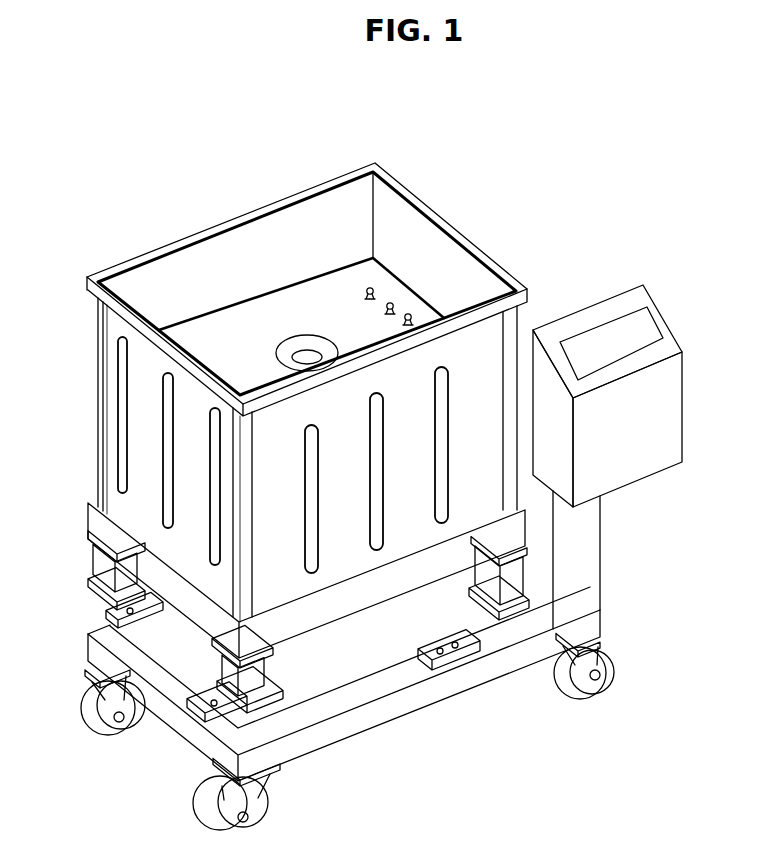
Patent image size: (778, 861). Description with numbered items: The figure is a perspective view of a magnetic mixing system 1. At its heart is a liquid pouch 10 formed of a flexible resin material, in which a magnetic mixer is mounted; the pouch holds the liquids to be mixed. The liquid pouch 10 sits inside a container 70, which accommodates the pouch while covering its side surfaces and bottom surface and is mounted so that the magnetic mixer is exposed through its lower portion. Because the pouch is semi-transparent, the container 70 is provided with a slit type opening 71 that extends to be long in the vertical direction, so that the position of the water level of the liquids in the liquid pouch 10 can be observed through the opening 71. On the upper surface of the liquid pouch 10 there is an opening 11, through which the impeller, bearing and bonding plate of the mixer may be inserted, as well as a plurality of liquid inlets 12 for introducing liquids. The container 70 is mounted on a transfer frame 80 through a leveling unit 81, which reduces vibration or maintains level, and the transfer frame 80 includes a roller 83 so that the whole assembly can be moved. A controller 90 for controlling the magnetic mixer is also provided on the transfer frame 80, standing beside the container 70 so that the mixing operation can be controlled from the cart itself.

The magnetic mixing system 1 is at (62, 171).
The liquid pouch 10 is at (213, 338).
The opening 11 is at (286, 345).
The liquid inlets 12 is at (413, 300).
The container 70 is at (97, 322).
The slit type opening 71 is at (167, 380).
The transfer frame 80 is at (432, 713).
The leveling unit 81 is at (293, 707).
The roller 83 is at (607, 665).
The controller 90 is at (627, 443).